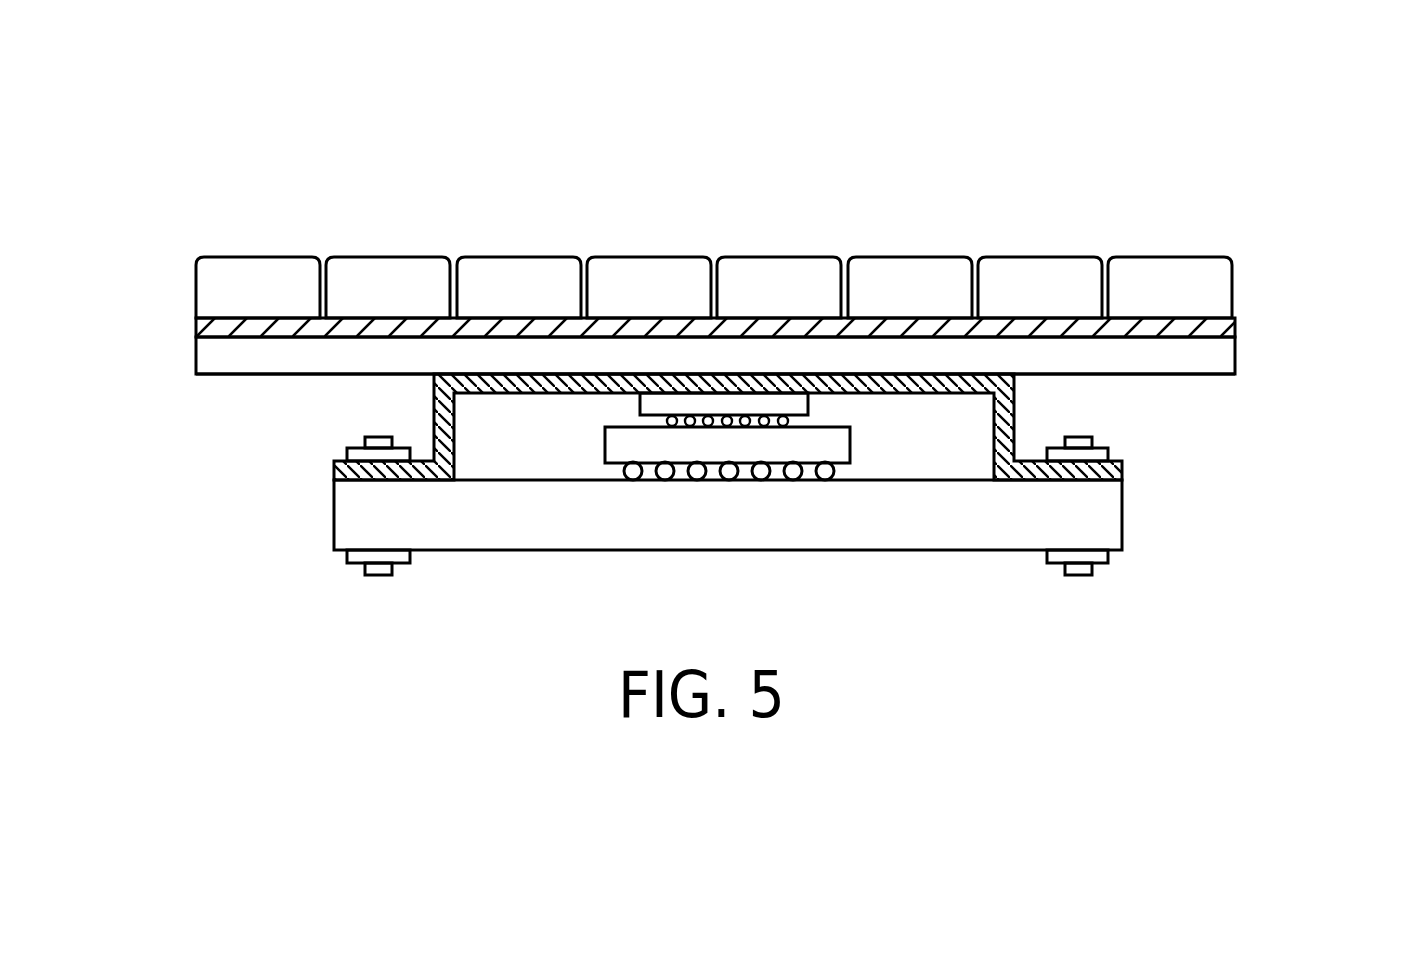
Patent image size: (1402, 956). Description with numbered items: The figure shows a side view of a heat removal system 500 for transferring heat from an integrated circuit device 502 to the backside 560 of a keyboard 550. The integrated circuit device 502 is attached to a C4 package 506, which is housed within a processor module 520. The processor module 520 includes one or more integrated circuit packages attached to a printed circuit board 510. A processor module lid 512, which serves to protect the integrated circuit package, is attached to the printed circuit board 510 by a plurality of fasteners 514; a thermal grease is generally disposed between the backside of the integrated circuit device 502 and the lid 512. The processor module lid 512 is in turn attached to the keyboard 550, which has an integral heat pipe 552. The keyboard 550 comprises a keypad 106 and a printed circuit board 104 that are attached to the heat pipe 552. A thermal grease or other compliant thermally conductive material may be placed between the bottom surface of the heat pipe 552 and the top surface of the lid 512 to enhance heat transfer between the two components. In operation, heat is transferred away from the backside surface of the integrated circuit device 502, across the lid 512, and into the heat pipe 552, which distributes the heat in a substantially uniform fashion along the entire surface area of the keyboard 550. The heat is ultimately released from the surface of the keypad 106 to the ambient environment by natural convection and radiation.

The heat removal system 500 is at (381, 99).
The keypad 106 is at (230, 272).
The printed circuit board 104 is at (195, 330).
The heat pipe 552 is at (195, 360).
The backside 560 is at (253, 380).
The keyboard 550 is at (1257, 300).
The processor module lid 512 is at (1016, 403).
The fasteners 514 is at (1092, 440).
The printed circuit board 510 is at (1107, 518).
The integrated circuit device 502 is at (803, 393).
The C4 package 506 is at (622, 446).
The processor module 520 is at (578, 604).